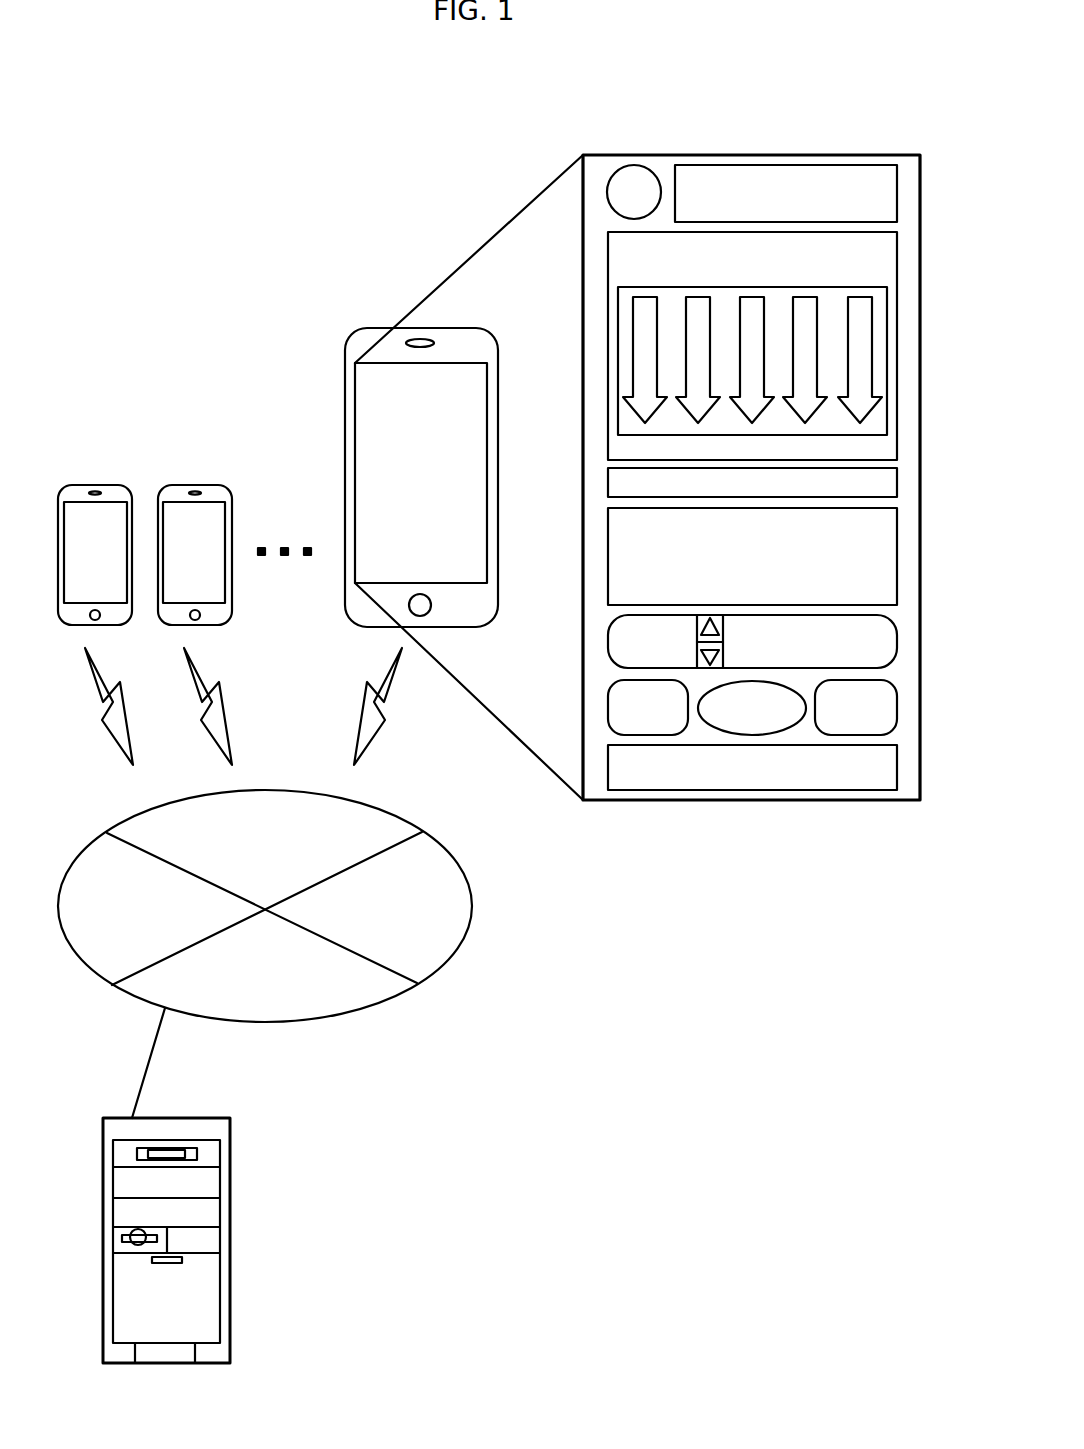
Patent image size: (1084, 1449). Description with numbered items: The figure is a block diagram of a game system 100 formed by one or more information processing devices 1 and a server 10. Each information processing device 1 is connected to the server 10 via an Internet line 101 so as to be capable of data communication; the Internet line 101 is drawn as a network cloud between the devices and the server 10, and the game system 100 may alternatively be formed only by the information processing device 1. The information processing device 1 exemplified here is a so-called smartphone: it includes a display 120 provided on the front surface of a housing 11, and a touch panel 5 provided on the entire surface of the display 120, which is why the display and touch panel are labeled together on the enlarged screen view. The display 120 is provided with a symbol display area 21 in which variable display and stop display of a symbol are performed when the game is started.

The game system 100 is at (97, 182).
The information processing device 1 is at (88, 465).
The housing 11 is at (348, 606).
The display 120 is at (662, 531).
The touch panel 5 is at (470, 375).
The symbol display area 21 is at (888, 297).
The Internet line 101 is at (278, 1025).
The server 10 is at (253, 1268).